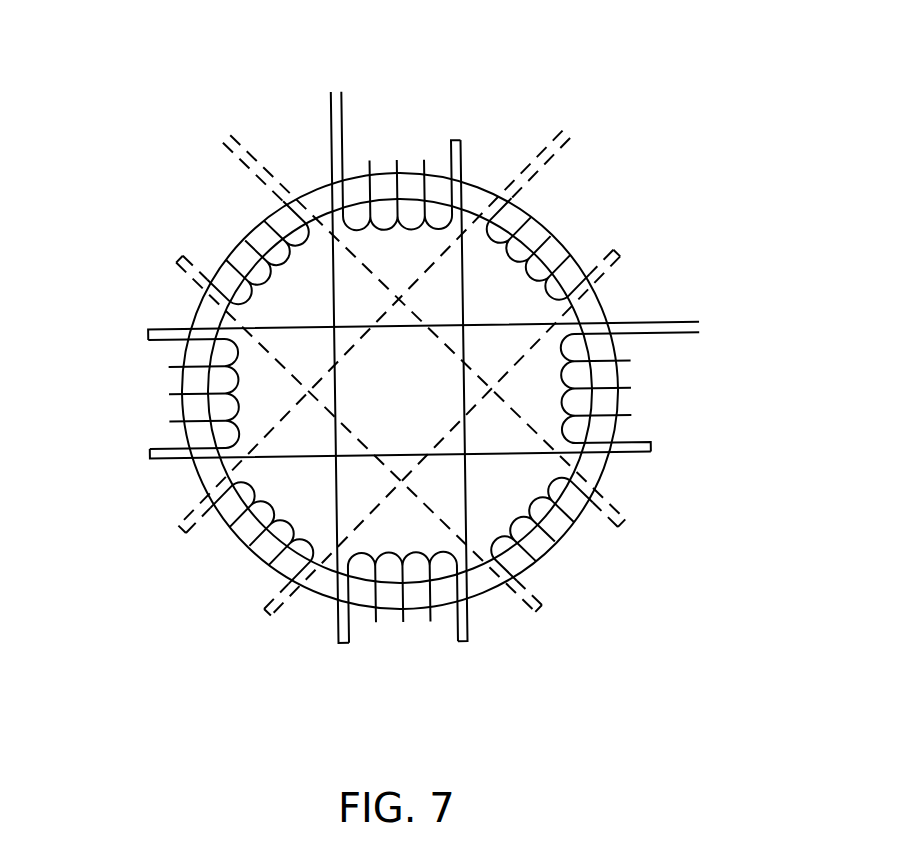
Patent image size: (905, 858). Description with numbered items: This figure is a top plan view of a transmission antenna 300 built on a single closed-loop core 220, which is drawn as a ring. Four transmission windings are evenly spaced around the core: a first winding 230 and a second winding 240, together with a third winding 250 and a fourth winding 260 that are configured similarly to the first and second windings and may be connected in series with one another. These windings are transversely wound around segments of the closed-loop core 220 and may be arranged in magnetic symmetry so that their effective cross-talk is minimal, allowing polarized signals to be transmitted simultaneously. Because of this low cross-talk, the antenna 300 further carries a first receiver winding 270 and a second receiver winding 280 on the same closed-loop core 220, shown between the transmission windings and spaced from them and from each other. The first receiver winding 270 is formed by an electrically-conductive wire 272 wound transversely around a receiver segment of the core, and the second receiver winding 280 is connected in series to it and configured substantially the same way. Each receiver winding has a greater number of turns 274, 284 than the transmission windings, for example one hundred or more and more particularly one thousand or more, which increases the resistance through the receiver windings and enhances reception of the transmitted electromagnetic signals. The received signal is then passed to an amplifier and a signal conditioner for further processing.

The transmission antenna 300 is at (135, 92).
The closed-loop core 220 is at (565, 245).
The third winding 250 is at (514, 111).
The fourth winding 260 is at (360, 664).
The first winding 230 is at (672, 406).
The second winding 240 is at (122, 424).
The first receiver winding 270 is at (346, 342).
The electrically-conductive wire 272 is at (427, 327).
The turns 274 is at (178, 189).
The second receiver winding 280 is at (593, 565).
The turns 284 is at (606, 548).